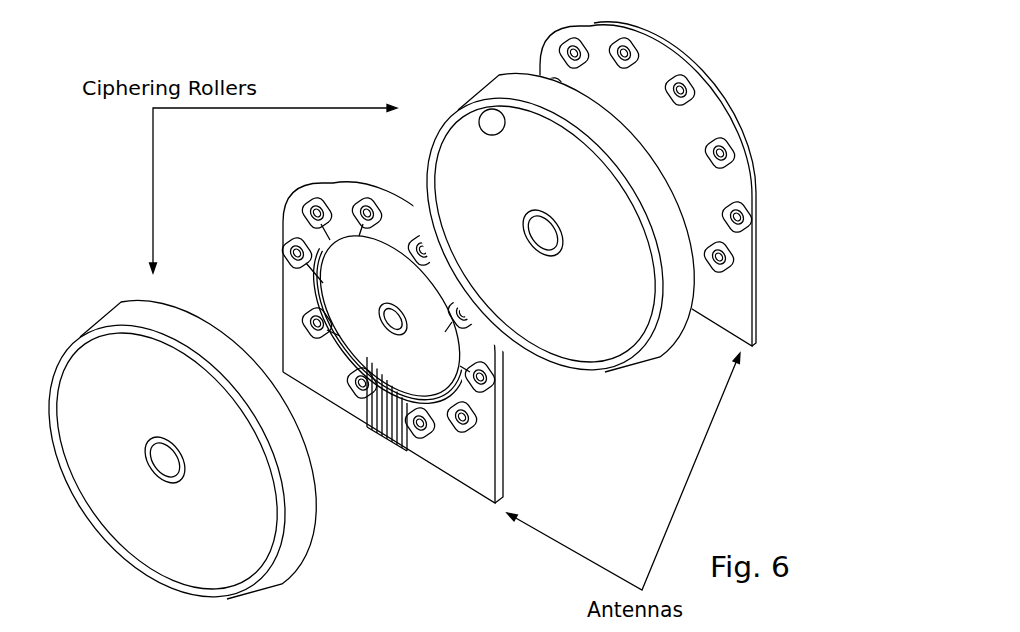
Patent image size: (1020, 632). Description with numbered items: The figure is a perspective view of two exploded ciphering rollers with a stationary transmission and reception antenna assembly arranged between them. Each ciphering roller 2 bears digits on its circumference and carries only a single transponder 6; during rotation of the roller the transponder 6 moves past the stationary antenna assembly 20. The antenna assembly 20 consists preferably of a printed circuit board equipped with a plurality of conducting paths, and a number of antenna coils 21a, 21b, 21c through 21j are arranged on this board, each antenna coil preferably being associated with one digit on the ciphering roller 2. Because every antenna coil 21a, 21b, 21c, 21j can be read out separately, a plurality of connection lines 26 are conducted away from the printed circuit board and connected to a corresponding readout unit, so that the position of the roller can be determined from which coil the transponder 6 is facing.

The ciphering roller 2 is at (613, 333).
The transponder 6 is at (490, 120).
The transmission and reception antenna assembly 20 is at (433, 376).
The antenna coil 21a is at (430, 425).
The antenna coil 21b is at (470, 418).
The antenna coil 21c is at (490, 385).
The antenna coil 21j is at (365, 403).
The connection lines 26 is at (403, 423).